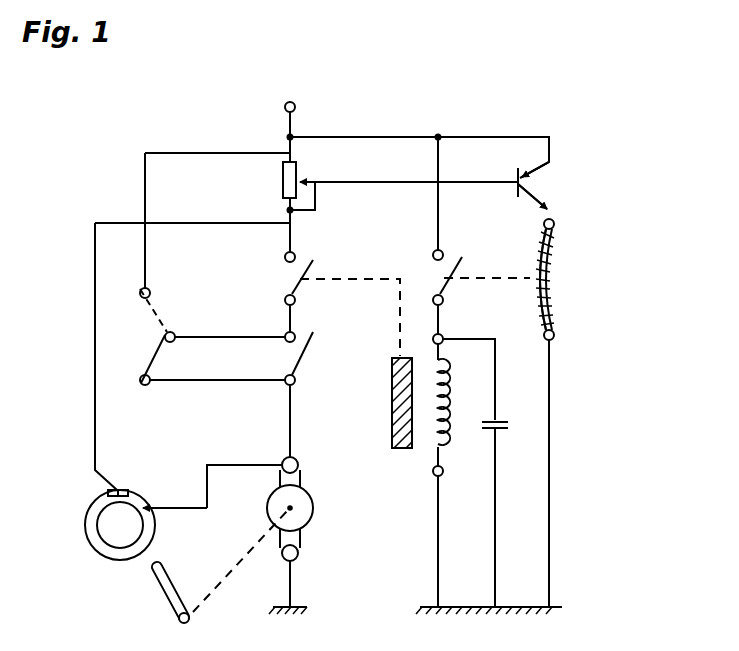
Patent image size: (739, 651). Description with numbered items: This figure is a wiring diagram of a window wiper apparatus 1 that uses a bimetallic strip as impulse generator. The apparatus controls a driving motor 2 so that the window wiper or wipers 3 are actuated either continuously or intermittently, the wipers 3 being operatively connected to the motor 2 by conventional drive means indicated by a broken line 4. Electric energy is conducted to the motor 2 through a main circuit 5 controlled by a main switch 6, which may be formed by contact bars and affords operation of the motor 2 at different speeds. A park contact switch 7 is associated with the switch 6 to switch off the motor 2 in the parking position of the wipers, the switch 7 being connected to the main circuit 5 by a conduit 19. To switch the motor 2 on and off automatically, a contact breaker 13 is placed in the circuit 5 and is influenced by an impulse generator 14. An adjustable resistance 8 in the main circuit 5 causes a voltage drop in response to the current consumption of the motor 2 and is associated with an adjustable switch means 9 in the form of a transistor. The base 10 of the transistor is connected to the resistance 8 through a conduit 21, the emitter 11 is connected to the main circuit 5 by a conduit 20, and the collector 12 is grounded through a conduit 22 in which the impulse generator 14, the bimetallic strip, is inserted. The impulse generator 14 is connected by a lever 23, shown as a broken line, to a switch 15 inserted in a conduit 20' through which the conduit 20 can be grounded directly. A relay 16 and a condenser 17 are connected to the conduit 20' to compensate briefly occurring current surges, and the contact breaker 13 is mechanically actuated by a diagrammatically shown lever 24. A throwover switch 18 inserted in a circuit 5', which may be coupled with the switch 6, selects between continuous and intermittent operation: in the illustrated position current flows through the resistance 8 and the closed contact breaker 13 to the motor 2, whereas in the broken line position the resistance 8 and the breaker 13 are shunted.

The window wiper apparatus 1 is at (424, 98).
The driving motor 2 is at (306, 496).
The window wiper 3 is at (163, 597).
The drive means 4 is at (225, 584).
The main circuit 5 is at (309, 97).
The circuit 5' is at (166, 202).
The main switch 6 is at (302, 360).
The park contact switch 7 is at (88, 502).
The adjustable resistance 8 is at (282, 174).
The adjustable switch means 9 is at (532, 168).
The base 10 is at (517, 170).
The emitter 11 is at (538, 170).
The collector 12 is at (531, 193).
The contact breaker 13 is at (304, 266).
The impulse generator 14 is at (574, 272).
The switch 15 is at (446, 291).
The relay 16 is at (390, 418).
The condenser 17 is at (502, 421).
The throwover switch 18 is at (149, 362).
The conduit 19 is at (95, 411).
The conduit 20 is at (419, 104).
The conduit 20' is at (409, 193).
The conduit 21 is at (357, 182).
The conduit 22 is at (554, 431).
The lever 23 is at (556, 242).
The lever 24 is at (372, 278).